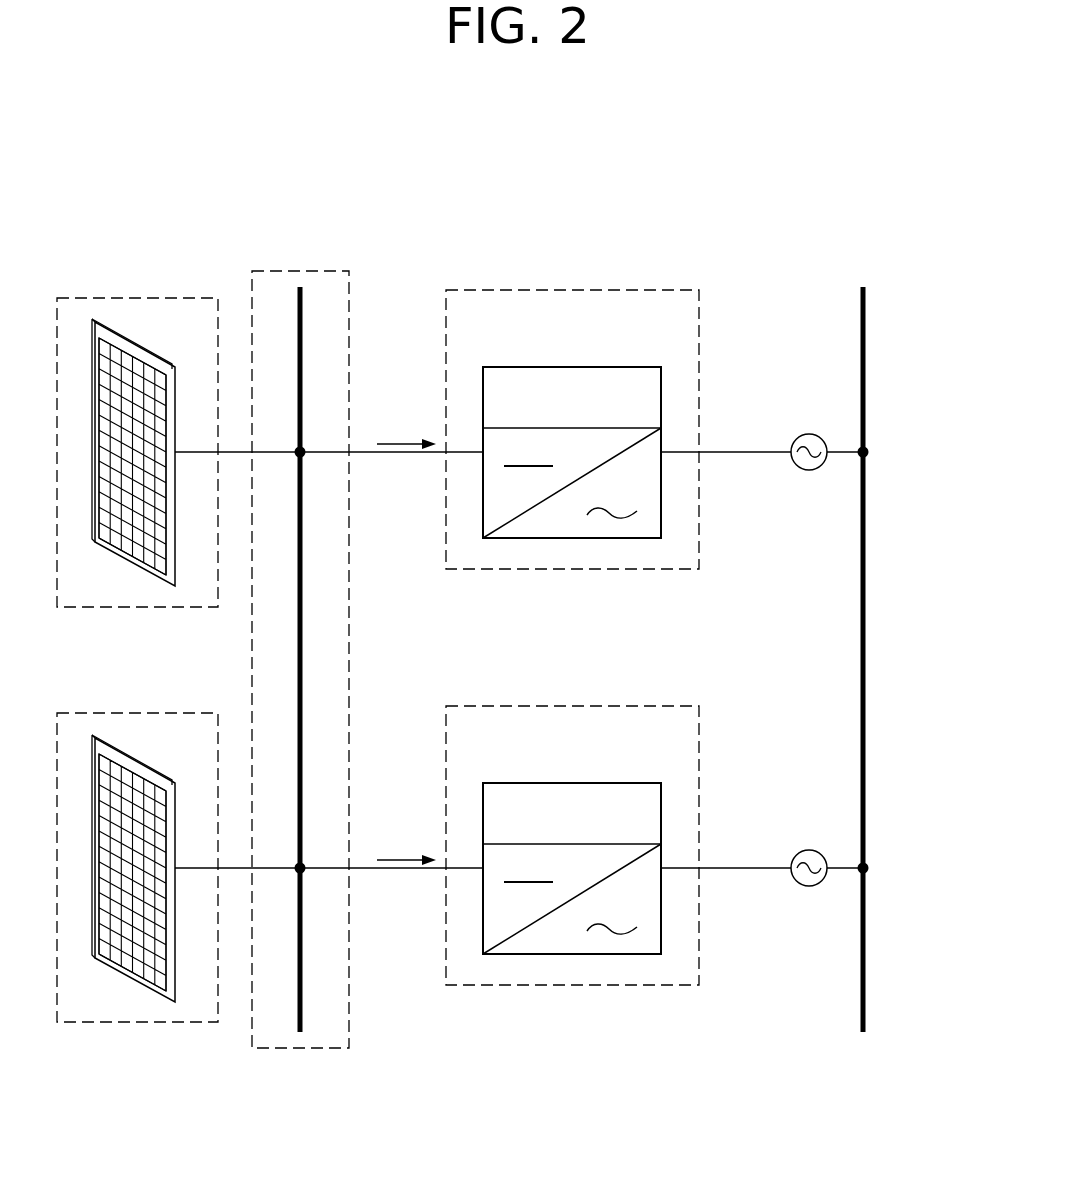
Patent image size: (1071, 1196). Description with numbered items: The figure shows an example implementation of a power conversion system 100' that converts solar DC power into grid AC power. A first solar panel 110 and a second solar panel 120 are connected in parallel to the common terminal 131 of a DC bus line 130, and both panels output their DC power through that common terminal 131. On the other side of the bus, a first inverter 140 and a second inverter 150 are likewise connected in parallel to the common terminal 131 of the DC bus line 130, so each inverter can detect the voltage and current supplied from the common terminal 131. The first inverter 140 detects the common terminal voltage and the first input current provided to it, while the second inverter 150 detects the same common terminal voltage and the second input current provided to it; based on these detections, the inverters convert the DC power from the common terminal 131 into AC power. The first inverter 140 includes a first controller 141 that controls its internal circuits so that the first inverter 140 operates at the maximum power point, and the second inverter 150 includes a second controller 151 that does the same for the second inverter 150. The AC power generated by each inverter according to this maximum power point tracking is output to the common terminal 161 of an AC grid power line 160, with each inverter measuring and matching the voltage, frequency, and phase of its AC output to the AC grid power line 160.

The power conversion system 100' is at (515, 610).
The first solar panel 110 is at (170, 298).
The second solar panel 120 is at (170, 713).
The DC bus line 130 is at (312, 271).
The common terminal 131 is at (303, 456).
The first inverter 140 is at (665, 290).
The first controller 141 is at (605, 367).
The second inverter 150 is at (665, 706).
The second controller 151 is at (605, 783).
The AC grid power line 160 is at (866, 326).
The common terminal 161 is at (866, 452).